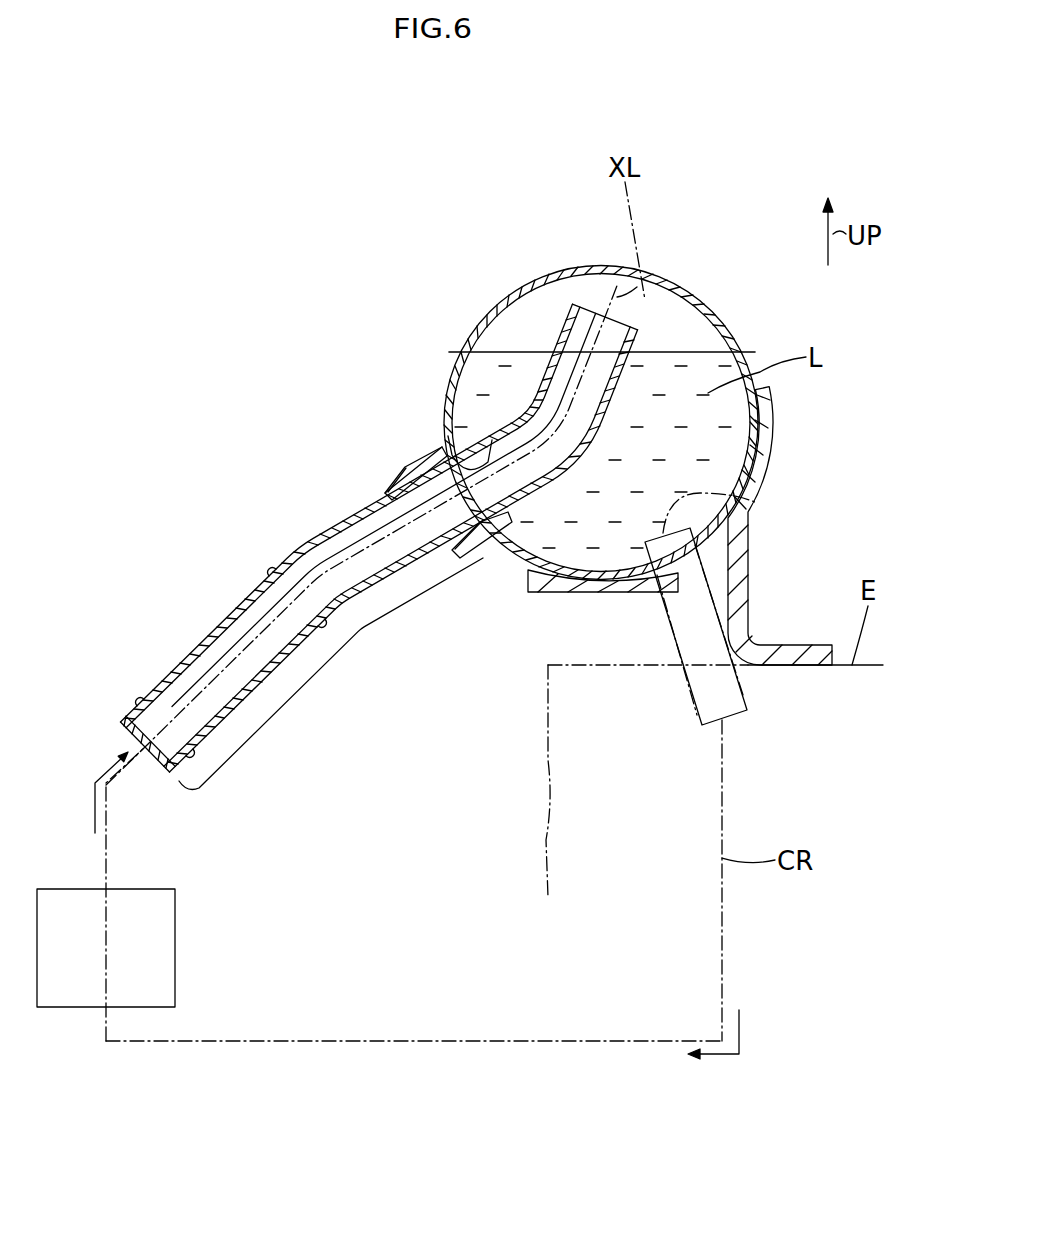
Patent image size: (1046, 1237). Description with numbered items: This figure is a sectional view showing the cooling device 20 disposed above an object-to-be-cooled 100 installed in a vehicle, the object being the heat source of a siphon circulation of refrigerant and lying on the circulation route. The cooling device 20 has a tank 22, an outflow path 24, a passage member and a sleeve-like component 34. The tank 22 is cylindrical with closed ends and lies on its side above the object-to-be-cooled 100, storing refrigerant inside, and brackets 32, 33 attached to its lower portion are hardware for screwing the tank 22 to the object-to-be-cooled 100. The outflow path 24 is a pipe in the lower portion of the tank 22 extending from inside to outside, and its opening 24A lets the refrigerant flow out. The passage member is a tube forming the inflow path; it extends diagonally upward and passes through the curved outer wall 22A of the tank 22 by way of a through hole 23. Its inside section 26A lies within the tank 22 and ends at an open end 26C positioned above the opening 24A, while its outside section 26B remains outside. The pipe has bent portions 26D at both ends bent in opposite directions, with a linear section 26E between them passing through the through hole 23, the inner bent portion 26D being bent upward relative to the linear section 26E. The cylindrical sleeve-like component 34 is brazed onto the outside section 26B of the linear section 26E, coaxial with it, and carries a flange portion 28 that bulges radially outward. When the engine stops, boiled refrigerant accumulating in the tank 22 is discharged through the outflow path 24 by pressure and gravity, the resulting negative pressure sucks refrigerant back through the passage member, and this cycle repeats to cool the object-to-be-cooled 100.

The cooling device 20 is at (674, 222).
The tank 22 is at (470, 322).
The outer wall 22A is at (690, 293).
The through hole 23 is at (490, 453).
The outflow path 24 is at (757, 690).
The opening 24A is at (755, 505).
The inside section 26A is at (660, 352).
The outside section 26B is at (340, 638).
The open end 26C is at (600, 313).
The bent portions 26D is at (558, 317).
The linear section 26E is at (377, 497).
The flange portion 28 is at (425, 447).
The bracket 32 is at (623, 597).
The bracket 33 is at (748, 578).
The sleeve-like component 34 is at (388, 476).
The object-to-be-cooled 100 is at (175, 943).